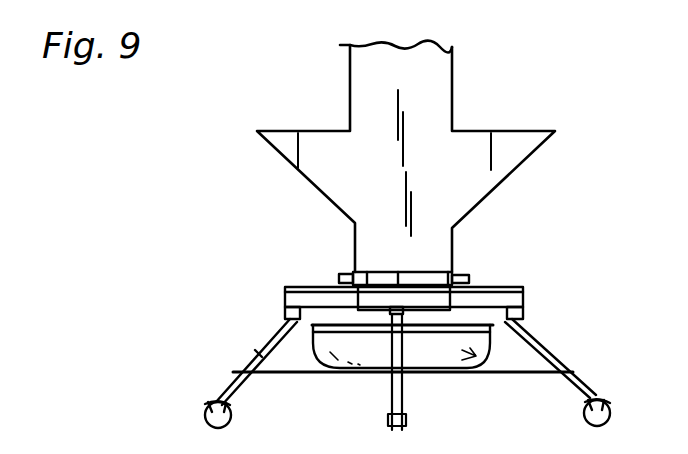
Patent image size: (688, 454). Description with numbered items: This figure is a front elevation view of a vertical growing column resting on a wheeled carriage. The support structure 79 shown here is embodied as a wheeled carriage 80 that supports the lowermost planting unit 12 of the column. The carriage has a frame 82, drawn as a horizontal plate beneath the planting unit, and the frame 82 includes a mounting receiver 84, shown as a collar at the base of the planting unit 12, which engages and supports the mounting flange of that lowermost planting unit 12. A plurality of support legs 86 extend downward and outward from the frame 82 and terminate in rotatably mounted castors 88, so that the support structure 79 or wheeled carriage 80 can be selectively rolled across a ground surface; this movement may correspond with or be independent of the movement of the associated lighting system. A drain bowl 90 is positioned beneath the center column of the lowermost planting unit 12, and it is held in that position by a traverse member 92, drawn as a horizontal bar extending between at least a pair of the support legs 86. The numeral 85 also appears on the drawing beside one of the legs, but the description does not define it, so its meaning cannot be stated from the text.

The planting unit 12 is at (457, 89).
The mounting receiver 84 is at (422, 272).
The frame 82 is at (480, 290).
The left leg 85 is at (290, 316).
The wheeled carriage 80 is at (552, 333).
The castors 88 is at (209, 410).
The traverse member 92 is at (537, 374).
The support structure 79 is at (591, 362).
The support legs 86 is at (392, 378).
The drain bowl 90 is at (482, 373).